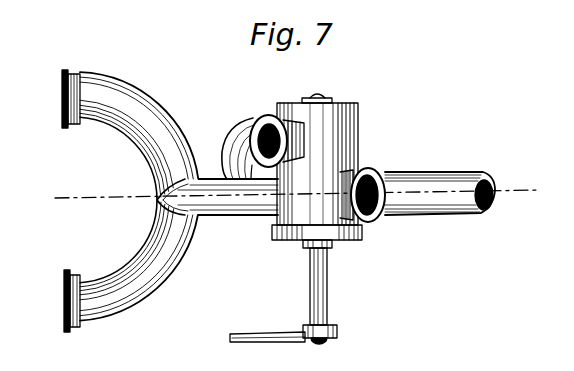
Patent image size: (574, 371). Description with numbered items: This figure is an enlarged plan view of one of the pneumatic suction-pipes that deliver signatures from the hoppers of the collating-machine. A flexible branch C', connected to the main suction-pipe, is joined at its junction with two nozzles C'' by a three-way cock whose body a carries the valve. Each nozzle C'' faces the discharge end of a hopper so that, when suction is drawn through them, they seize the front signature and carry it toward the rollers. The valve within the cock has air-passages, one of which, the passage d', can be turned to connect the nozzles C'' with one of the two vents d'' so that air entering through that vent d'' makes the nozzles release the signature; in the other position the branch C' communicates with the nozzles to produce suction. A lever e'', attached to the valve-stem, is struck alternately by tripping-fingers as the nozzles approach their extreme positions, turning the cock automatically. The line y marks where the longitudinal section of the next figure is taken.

The valve body a is at (317, 219).
The flexible branch c' is at (440, 178).
The nozzle c'' is at (170, 201).
The air-passage d' is at (244, 135).
The vent d'' is at (301, 168).
The lever e'' is at (267, 351).
The section line Y Y y is at (287, 198).